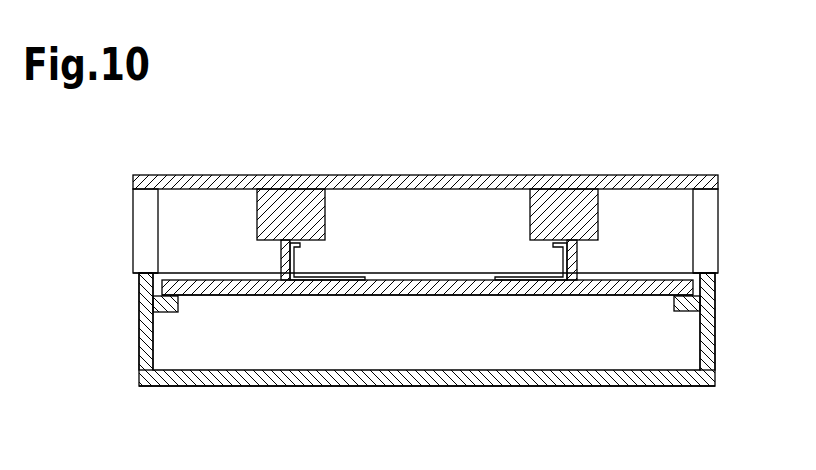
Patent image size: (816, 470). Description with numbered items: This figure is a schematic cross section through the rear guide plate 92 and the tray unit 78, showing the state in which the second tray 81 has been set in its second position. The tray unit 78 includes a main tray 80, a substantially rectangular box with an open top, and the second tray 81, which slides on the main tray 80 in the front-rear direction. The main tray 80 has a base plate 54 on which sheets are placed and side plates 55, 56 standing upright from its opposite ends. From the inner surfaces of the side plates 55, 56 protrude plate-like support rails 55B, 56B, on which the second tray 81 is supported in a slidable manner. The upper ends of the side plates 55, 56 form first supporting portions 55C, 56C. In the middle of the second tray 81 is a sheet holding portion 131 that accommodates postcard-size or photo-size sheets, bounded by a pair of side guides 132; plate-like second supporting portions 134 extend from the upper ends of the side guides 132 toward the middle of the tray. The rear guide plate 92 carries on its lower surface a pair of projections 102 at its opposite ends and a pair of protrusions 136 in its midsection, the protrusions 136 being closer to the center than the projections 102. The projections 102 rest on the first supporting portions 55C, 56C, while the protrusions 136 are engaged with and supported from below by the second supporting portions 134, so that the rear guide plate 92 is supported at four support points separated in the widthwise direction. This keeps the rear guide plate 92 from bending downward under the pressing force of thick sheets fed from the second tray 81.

The rear guide plate 92 is at (430, 176).
The projections 102 is at (133, 223).
The protrusions 136 is at (340, 192).
The side guides 132 is at (282, 250).
The second supporting portions 134 is at (300, 248).
The sheet holding portion 131 is at (408, 278).
The base plate 54 is at (372, 370).
The right side plate 56 is at (139, 326).
The left side plate 55 is at (715, 327).
The first supporting portion 56C is at (140, 272).
The first supporting portion 55C is at (713, 272).
The support rail 56B is at (178, 305).
The support rail 55B is at (673, 304).
The second tray 81 is at (465, 297).
The main tray 80 is at (468, 387).
The tray unit 78 is at (171, 424).